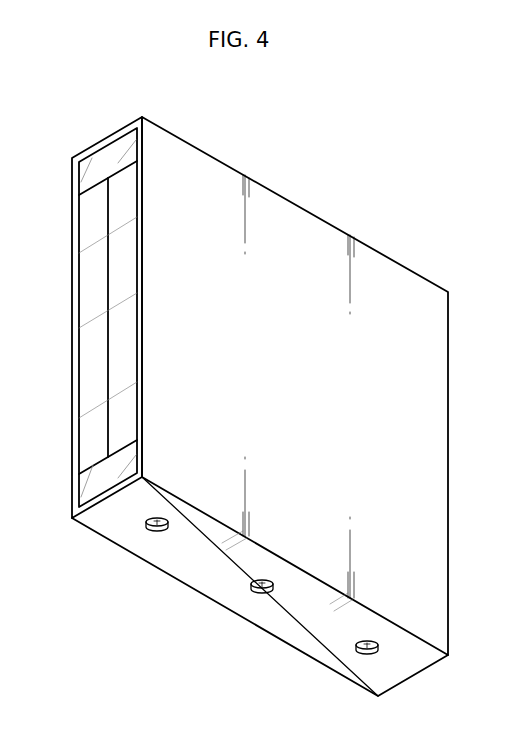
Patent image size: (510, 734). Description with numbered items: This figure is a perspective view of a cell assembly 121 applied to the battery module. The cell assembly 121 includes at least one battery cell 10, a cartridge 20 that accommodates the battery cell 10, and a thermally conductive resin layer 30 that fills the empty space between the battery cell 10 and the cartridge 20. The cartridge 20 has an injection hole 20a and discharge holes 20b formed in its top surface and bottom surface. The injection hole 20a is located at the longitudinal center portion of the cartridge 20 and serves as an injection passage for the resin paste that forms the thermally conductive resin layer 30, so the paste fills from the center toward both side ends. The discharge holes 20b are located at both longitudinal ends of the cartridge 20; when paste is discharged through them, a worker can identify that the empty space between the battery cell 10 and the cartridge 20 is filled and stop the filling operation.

The cartridge 20 is at (175, 137).
The battery cell 10 is at (122, 312).
The thermally conductive resin layer 30 is at (92, 169).
The cell assembly 121 is at (301, 174).
The injection hole 20a is at (262, 593).
The discharge hole 20b is at (157, 531).